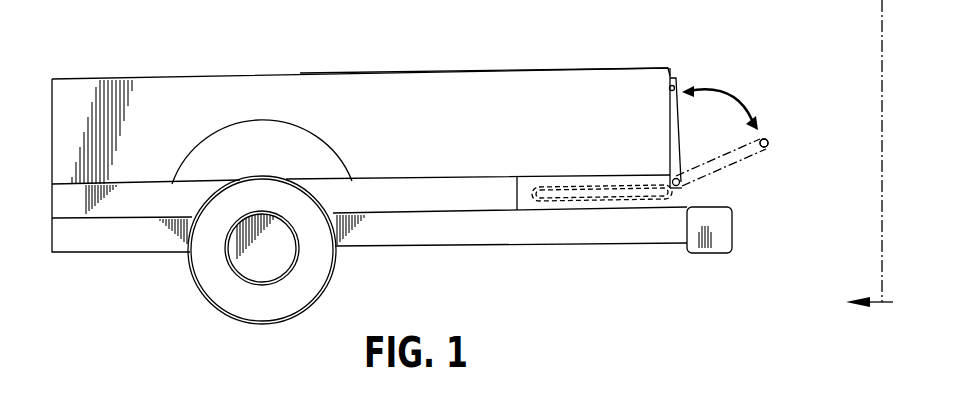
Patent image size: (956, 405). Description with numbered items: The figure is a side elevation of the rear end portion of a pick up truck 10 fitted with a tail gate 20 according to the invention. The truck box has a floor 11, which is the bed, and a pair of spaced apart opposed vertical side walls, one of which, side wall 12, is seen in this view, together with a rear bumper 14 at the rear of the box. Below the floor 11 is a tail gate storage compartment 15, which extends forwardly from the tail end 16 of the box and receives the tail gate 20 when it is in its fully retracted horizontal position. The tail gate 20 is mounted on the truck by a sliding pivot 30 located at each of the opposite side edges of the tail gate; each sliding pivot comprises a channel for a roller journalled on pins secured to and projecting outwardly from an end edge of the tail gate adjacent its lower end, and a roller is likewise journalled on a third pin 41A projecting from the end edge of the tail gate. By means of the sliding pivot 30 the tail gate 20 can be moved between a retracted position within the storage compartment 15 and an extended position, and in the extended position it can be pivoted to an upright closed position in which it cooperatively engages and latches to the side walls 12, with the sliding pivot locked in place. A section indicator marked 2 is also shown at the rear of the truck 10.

The pick up truck 10 is at (219, 62).
The floor 11 is at (440, 177).
The vertical side wall 12 is at (536, 80).
The rear bumper 14 is at (727, 237).
The tail gate storage compartment 15 is at (553, 207).
The tail end 16 is at (672, 194).
The tail gate 20 is at (680, 127).
The sliding pivot 30 is at (625, 200).
The third pin 41A is at (767, 139).
The section line 2 is at (869, 174).